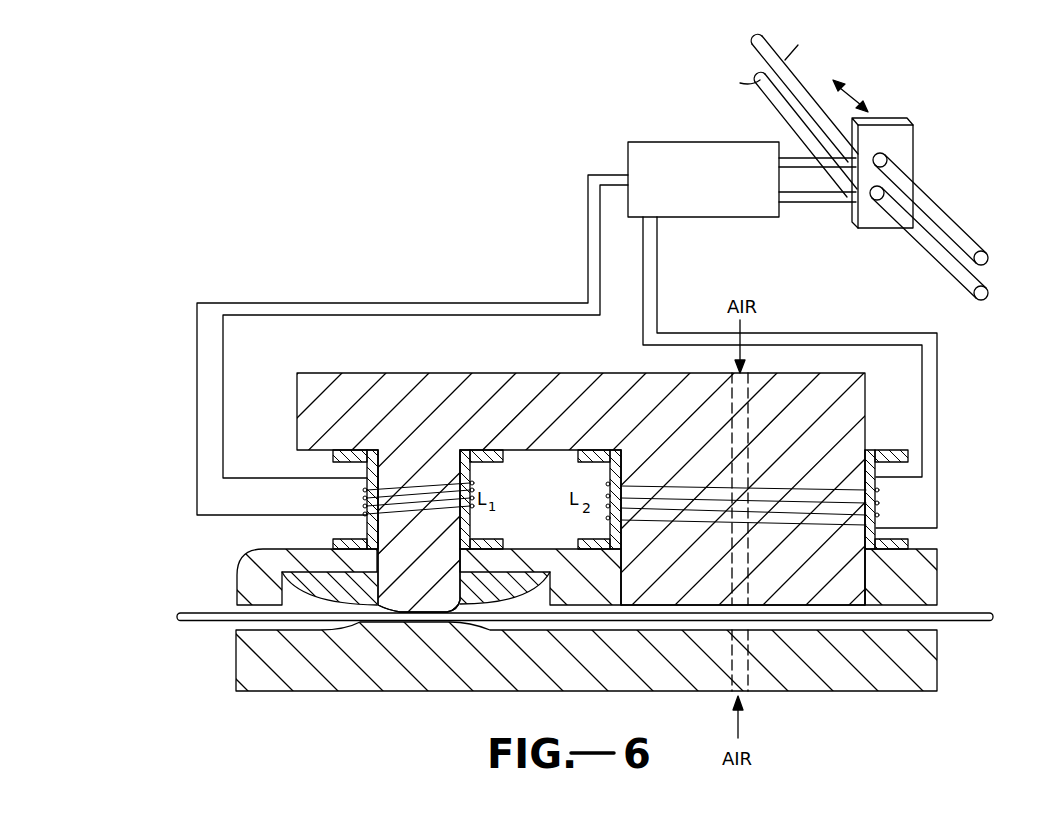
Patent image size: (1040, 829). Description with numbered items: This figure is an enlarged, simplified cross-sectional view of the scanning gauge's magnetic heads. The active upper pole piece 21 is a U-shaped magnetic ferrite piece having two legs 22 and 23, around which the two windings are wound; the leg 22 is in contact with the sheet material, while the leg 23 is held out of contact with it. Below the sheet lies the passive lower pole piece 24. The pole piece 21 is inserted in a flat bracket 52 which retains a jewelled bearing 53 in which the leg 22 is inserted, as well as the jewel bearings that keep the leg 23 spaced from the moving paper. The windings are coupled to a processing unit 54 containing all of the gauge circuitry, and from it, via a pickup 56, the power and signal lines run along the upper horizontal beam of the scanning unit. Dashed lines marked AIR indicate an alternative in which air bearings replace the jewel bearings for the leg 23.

The pole piece 21 is at (442, 378).
The leg 22 is at (420, 556).
The leg 23 is at (700, 557).
The lower pole piece 24 is at (632, 693).
The flat bracket 52 is at (237, 578).
The jewelled bearing 53 is at (315, 590).
The processing unit 54 is at (627, 147).
The pickup 56 is at (908, 128).